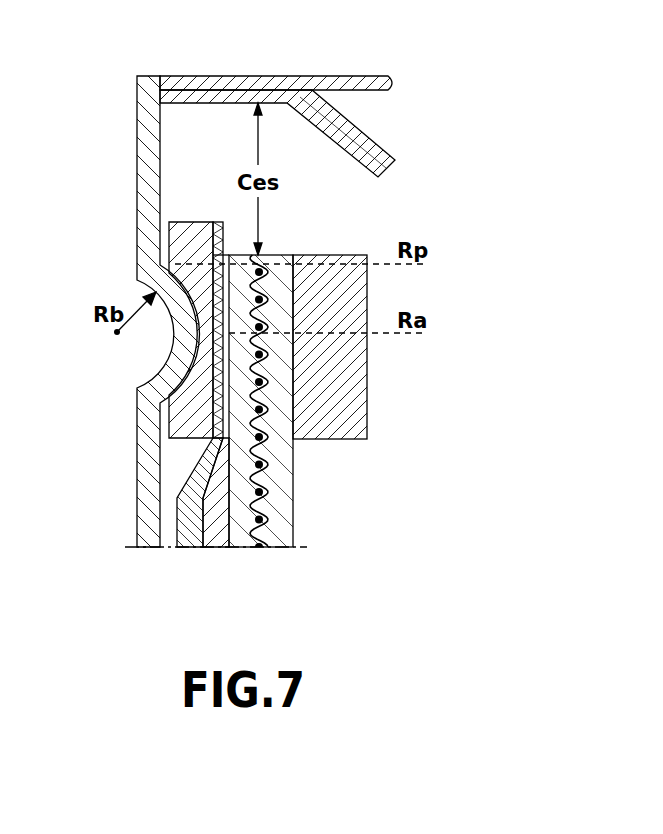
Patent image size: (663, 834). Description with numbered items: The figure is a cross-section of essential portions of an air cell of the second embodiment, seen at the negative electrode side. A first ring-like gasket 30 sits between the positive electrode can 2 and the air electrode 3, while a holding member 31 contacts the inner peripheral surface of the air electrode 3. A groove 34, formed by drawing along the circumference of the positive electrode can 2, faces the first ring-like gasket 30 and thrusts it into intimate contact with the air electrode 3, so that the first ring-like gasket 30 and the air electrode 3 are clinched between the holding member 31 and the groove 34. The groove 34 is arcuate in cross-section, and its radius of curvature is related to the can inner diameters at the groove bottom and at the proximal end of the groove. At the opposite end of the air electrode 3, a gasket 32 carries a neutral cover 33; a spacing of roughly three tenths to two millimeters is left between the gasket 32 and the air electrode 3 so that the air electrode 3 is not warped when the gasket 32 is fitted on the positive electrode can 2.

The positive electrode can 2 is at (146, 142).
The air electrode 3 is at (259, 562).
The first ring-like gasket 30 is at (181, 420).
The holding member 31 is at (348, 387).
The gasket 32 is at (357, 127).
The neutral cover 33 is at (283, 77).
The groove 34 is at (162, 368).